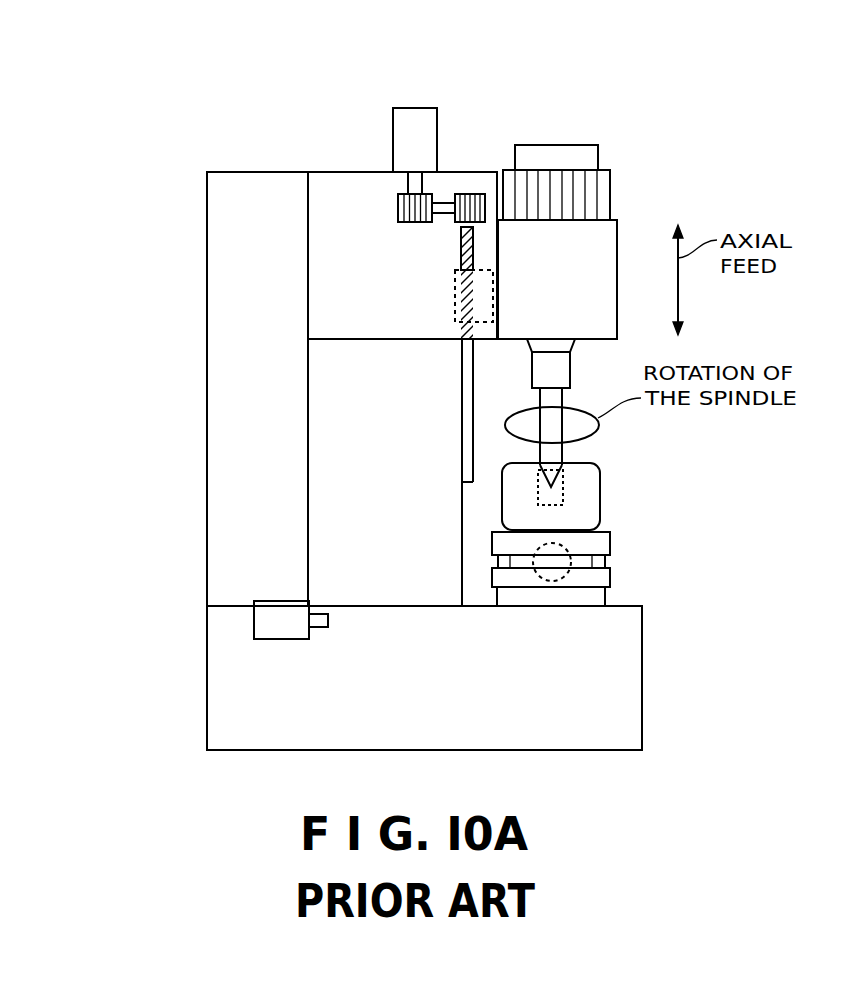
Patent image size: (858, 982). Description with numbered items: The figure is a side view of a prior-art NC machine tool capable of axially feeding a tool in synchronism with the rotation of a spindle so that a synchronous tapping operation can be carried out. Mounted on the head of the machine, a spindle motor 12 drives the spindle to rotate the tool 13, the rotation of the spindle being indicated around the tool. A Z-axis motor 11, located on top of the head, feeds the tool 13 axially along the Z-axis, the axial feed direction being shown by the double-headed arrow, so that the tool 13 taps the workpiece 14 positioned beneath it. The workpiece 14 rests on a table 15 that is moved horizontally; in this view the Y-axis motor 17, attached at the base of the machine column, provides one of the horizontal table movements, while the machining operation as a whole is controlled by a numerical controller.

The Z-axis motor 11 is at (400, 108).
The spindle motor 12 is at (617, 226).
The tool 13 is at (563, 457).
The workpiece 14 is at (600, 490).
The table 15 is at (610, 540).
The Y-axis motor 17 is at (254, 627).